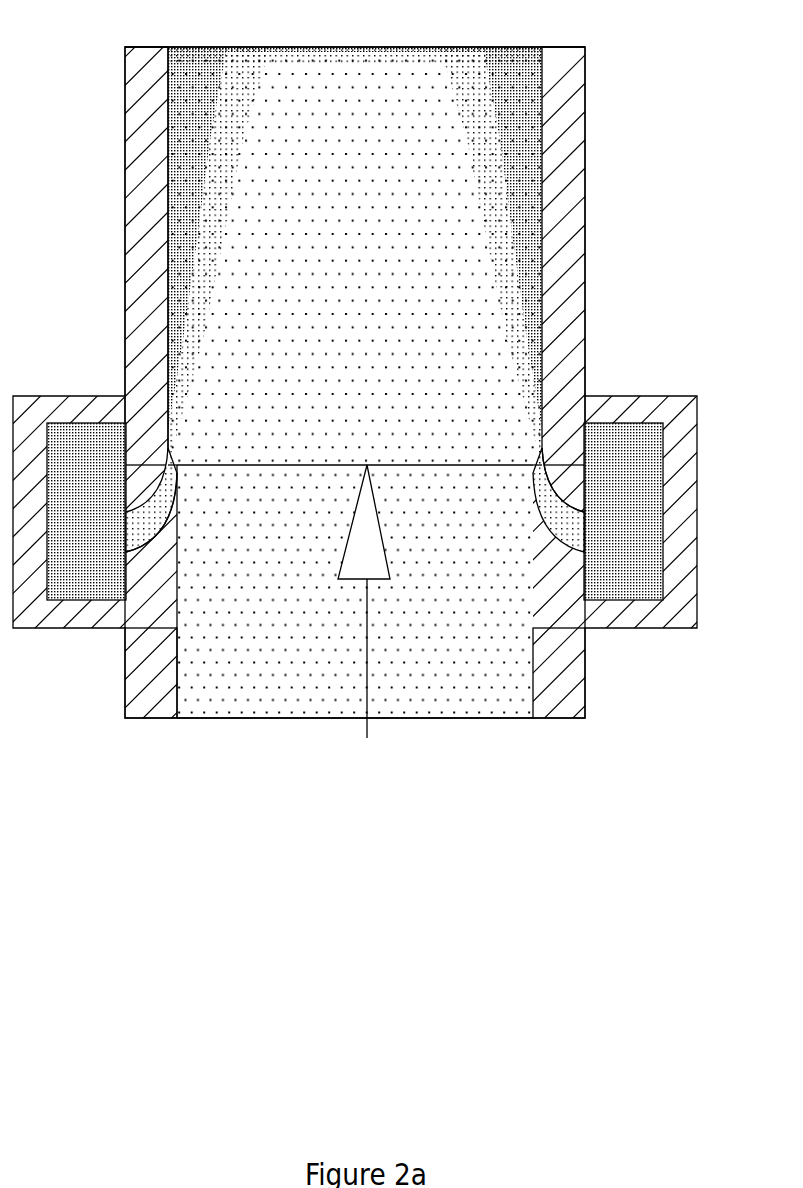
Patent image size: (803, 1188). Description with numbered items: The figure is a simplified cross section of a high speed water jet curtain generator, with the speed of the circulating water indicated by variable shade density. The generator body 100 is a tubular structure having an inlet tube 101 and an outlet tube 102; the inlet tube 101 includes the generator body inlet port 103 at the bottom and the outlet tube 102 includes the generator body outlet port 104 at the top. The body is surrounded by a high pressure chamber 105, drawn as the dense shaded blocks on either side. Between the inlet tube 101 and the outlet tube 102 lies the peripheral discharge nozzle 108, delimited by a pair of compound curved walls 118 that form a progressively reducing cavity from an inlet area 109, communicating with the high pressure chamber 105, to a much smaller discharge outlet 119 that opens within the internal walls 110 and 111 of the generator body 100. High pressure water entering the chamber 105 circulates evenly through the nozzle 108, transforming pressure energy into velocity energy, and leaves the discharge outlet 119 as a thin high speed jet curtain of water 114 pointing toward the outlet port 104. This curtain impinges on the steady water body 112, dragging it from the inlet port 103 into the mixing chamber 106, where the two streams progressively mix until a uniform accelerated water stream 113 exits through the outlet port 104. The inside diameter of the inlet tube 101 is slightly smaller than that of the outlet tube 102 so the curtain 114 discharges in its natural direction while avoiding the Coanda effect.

The generator body 100 is at (125, 262).
The inlet tube 101 is at (572, 685).
The outlet tube 102 is at (568, 97).
The generator body inlet port 103 is at (455, 712).
The generator body outlet port 104 is at (468, 46).
The high pressure chamber 105 is at (628, 455).
The mixing chamber 106 is at (314, 202).
The peripheral discharge nozzle 108 is at (553, 512).
The nozzle inlet area 109 is at (127, 527).
The internal wall of the generator body 110 is at (177, 677).
The internal wall of the generator body 111 is at (168, 143).
The steady water body 112 is at (290, 387).
The accelerated water stream 113 is at (333, 112).
The high speed jet curtain of water 114 is at (520, 182).
The nozzle walls 118 is at (127, 512).
The nozzle discharge outlet 119 is at (542, 478).